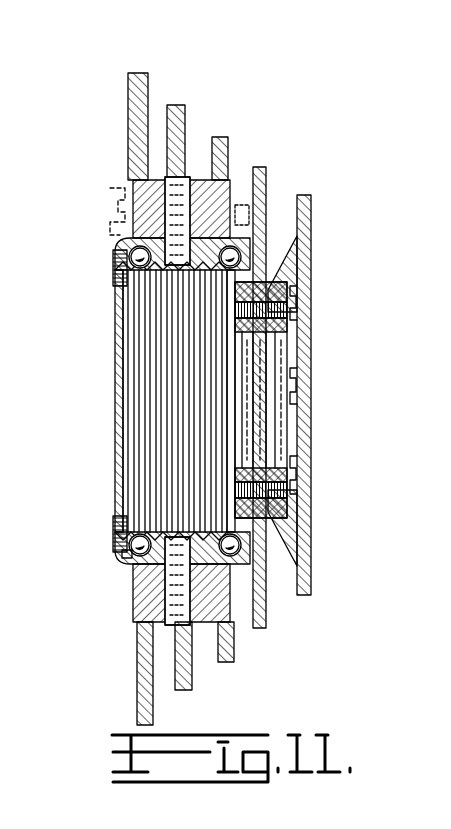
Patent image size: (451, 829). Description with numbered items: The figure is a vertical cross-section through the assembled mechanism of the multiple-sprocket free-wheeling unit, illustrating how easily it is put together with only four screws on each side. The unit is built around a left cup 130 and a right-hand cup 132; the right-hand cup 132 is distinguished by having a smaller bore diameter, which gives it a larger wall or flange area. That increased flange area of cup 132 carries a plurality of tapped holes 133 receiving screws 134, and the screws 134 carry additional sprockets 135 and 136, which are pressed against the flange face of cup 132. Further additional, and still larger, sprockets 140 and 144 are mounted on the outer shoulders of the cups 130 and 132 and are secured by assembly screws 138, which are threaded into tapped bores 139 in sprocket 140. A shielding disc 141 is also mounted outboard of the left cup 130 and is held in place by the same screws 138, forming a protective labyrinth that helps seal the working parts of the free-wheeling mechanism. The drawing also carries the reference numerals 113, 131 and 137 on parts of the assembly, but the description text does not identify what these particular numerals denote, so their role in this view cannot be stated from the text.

The shaft 113 is at (185, 120).
The left cup 130 is at (125, 555).
The bottom cover bar 131 is at (133, 622).
The right-hand cup 132 is at (232, 554).
The tapped holes 133 is at (270, 338).
The screws 134 is at (292, 383).
The additional sprocket 135 is at (267, 184).
The additional sprocket 136 is at (302, 221).
The seal 137 is at (124, 553).
The assembly screws 138 is at (112, 222).
The tapped bores 139 is at (233, 620).
The sprocket 140 is at (228, 142).
The shielding disc 141 is at (110, 258).
The sprocket 144 is at (143, 82).